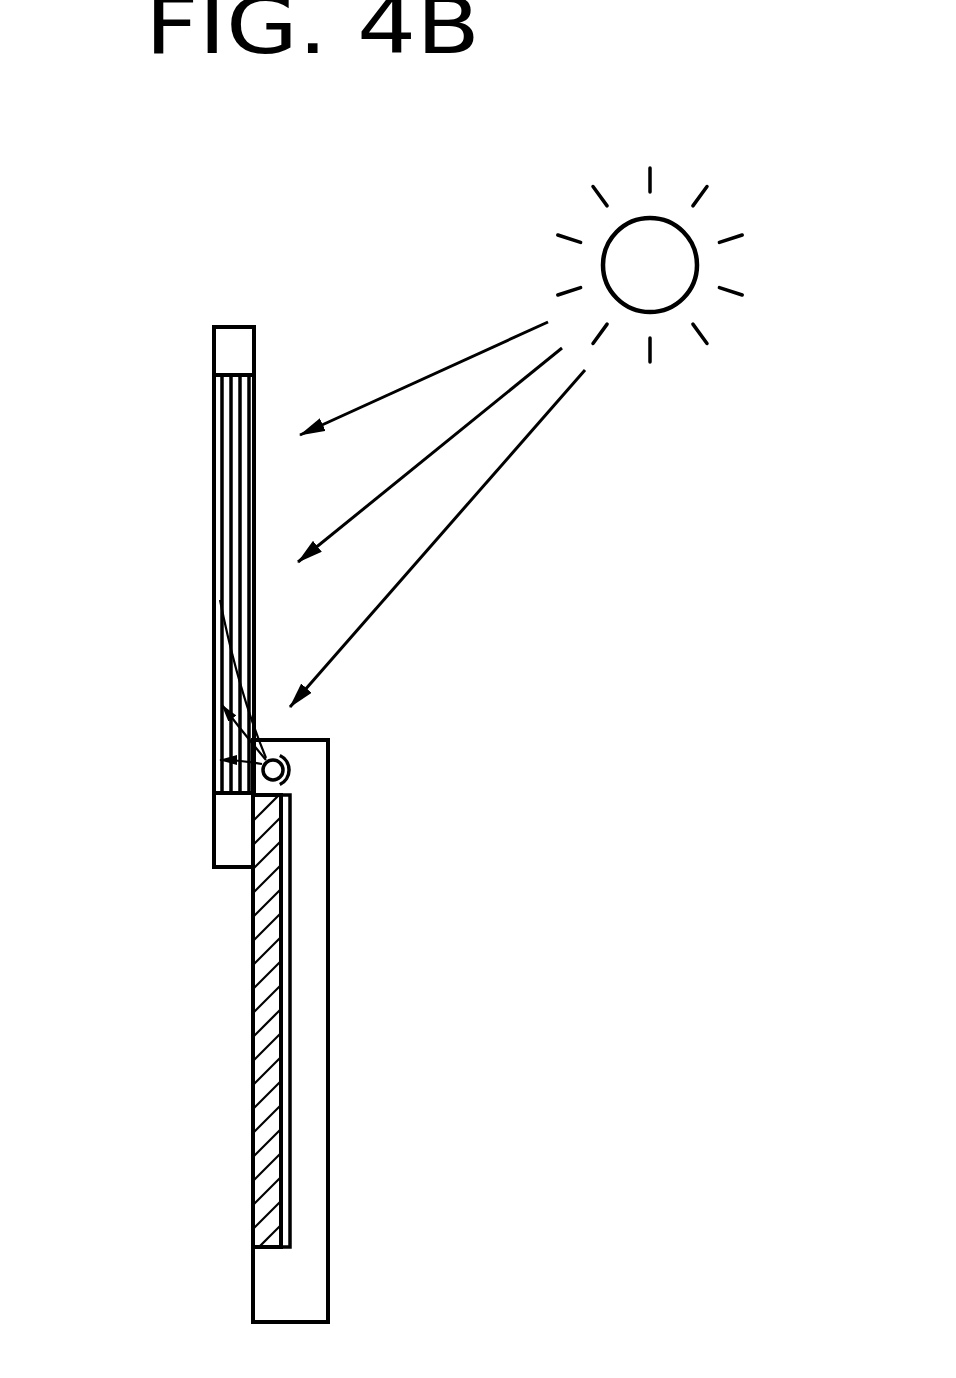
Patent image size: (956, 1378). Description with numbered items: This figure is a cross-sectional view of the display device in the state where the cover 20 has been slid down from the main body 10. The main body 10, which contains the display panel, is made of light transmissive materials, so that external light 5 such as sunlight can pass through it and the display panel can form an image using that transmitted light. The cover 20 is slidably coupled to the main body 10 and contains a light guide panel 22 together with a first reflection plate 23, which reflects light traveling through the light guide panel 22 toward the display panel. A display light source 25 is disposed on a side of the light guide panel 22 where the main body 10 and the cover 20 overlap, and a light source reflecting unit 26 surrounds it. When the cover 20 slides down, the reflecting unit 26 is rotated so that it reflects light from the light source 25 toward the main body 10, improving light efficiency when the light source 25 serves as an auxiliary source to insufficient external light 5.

The external light 5 is at (720, 315).
The main body 10 is at (188, 503).
The cover 20 is at (313, 1057).
The light guide panel 22 is at (262, 975).
The first reflection plate 23 is at (283, 984).
The display light source 25 is at (285, 775).
The light source reflecting unit 26 is at (288, 760).